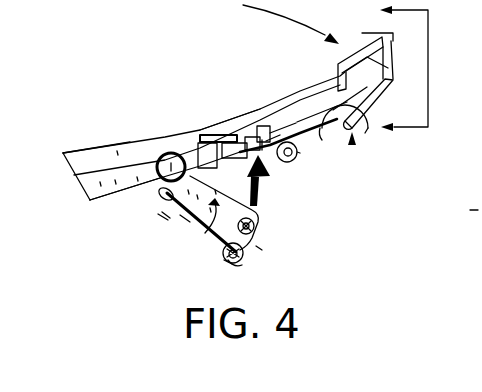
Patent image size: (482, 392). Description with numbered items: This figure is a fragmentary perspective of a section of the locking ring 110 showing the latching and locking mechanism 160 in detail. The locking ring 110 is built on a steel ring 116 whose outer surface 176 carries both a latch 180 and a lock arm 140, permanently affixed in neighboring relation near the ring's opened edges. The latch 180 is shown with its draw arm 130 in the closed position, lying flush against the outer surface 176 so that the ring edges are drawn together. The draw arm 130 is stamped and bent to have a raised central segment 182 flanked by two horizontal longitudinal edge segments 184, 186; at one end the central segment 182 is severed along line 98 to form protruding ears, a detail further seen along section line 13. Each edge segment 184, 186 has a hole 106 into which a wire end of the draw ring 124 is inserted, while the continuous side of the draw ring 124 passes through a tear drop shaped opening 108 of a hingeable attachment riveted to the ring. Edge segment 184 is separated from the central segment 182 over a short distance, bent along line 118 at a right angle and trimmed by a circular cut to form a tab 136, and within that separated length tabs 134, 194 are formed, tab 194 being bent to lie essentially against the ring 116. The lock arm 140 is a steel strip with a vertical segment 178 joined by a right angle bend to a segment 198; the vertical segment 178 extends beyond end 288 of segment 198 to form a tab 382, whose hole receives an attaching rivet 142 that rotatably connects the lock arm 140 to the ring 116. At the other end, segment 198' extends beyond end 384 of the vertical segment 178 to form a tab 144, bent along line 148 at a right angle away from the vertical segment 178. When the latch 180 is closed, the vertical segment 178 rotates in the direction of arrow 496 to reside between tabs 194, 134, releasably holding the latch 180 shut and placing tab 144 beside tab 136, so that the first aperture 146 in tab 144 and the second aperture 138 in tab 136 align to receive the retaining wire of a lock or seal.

The section line 13- 13 is at (404, 65).
The severance line 98 is at (467, 222).
The hole 106 is at (378, 98).
The tear drop shaped opening 108 is at (382, 56).
The locking ring 110 is at (232, 110).
The steel ring 116 is at (86, 150).
The bend line 118 is at (284, 164).
The draw ring 124 is at (366, 122).
The draw arm 130 is at (280, 88).
The tab 134 is at (192, 205).
The tab 136 is at (300, 153).
The second aperture 138 is at (283, 167).
The lock arm 140 is at (208, 222).
The attaching rivet 142 is at (157, 191).
The tab 144 is at (247, 265).
The first aperture 146 is at (229, 260).
The bend line 148 is at (244, 261).
The latching and locking mechanism 160 is at (237, 80).
The outer surface 176 is at (108, 197).
The vertical segment 178 is at (180, 217).
The latch 180 is at (352, 145).
The raised central segment 182 is at (395, 190).
The longitudinal edge segment 184 is at (367, 113).
The longitudinal edge segment 186 is at (318, 88).
The tab 194 is at (199, 143).
The segment 198 is at (112, 254).
The segment 198' is at (279, 275).
The end 288 is at (163, 214).
The tab 382 is at (133, 150).
The end 384 is at (256, 247).
The arrow 496 is at (253, 230).